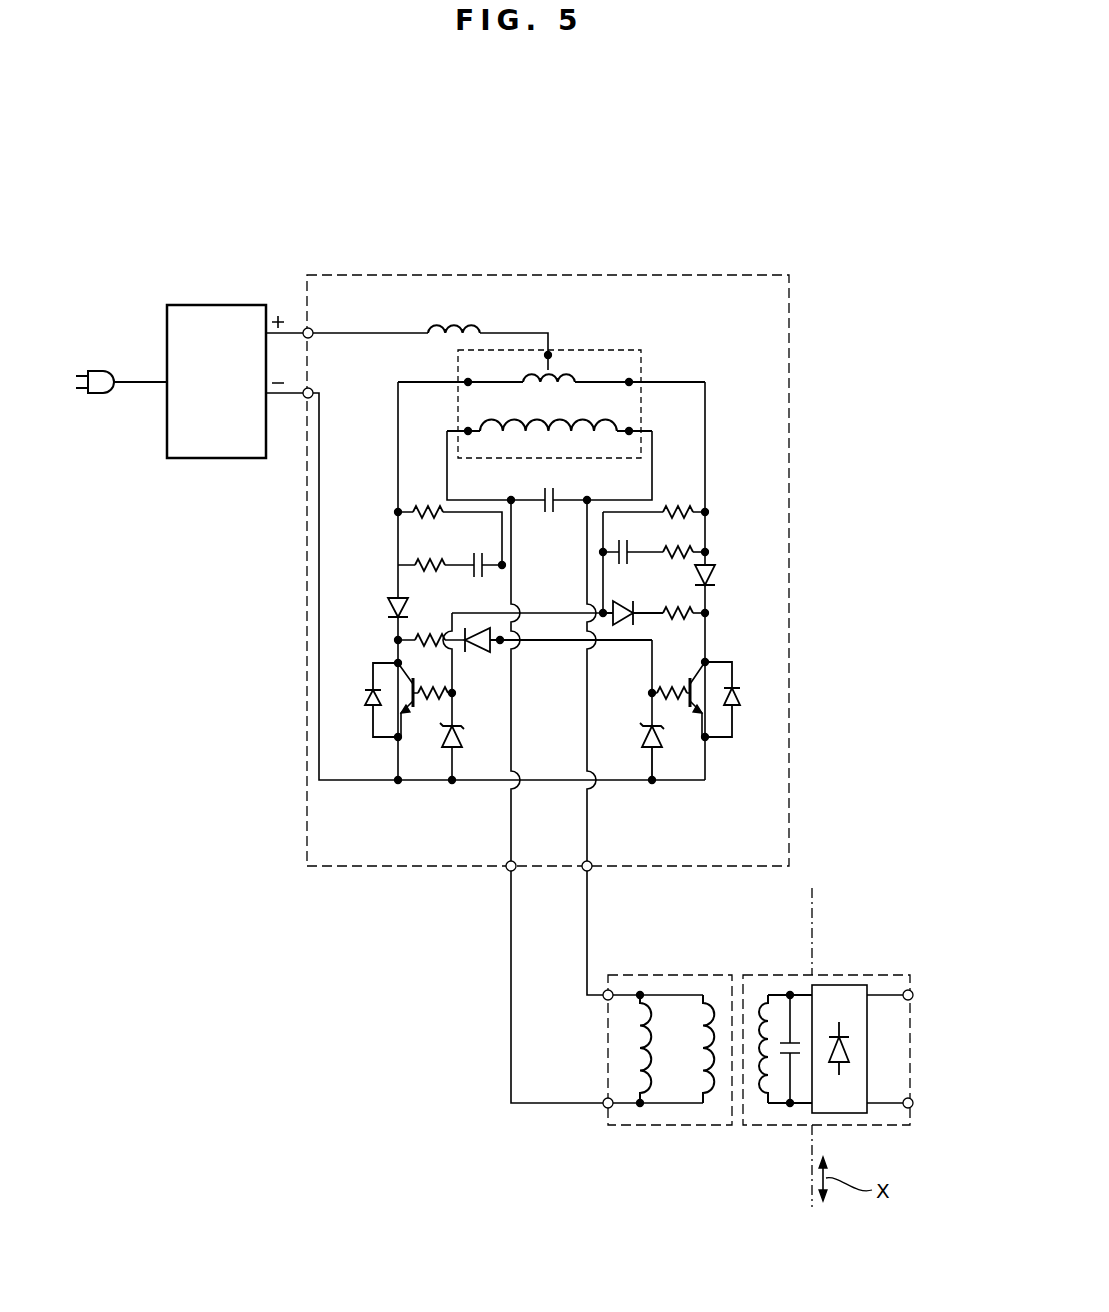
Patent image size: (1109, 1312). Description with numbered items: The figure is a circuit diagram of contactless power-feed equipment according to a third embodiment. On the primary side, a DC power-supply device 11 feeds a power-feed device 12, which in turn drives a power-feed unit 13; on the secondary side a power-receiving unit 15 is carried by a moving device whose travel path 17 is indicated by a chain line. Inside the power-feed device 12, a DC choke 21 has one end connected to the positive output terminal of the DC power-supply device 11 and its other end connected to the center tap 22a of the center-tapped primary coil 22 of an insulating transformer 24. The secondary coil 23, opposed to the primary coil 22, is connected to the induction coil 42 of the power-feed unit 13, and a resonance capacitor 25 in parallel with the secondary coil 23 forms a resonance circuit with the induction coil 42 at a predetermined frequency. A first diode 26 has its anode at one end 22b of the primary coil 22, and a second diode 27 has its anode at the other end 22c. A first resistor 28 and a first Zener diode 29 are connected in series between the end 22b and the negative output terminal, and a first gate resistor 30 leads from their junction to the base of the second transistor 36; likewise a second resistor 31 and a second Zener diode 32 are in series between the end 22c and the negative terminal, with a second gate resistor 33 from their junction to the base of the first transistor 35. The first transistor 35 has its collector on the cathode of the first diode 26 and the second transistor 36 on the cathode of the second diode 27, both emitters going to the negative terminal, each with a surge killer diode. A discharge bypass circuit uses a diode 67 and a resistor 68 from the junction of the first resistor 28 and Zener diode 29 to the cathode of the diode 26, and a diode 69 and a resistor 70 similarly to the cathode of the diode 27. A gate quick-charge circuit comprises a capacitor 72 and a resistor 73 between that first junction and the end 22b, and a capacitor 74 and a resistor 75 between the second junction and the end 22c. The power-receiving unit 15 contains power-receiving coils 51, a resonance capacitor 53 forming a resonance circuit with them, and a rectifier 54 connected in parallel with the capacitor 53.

The DC power-supply device 11 is at (200, 460).
The power-feed device 12 is at (790, 285).
The power-feed unit 13 is at (660, 1128).
The power-receiving unit 15 is at (913, 1040).
The travel path 17 is at (813, 908).
The DC choke 21 is at (474, 314).
The center-tapped primary coil 22 is at (578, 371).
The center tap 22a is at (549, 352).
The one end of the center-tapped primary coil 22b is at (466, 382).
The another end of the center-tapped primary coil 22c is at (629, 385).
The secondary coil 23 is at (477, 417).
The insulating transformer 24 is at (643, 358).
The resonance capacitor 25 is at (554, 488).
The first diode 26 is at (388, 600).
The second diode 27 is at (716, 570).
The first resistor 28 is at (424, 506).
The first Zener diode 29 is at (640, 726).
The first gate resistor 30 is at (658, 700).
The second resistor 31 is at (676, 508).
The second Zener diode 32 is at (460, 746).
The second gate resistor 33 is at (433, 702).
The first transistor 35 is at (420, 688).
The second transistor 36 is at (690, 680).
The induction coil 42 is at (640, 1035).
The power-receiving coils 51 is at (763, 1095).
The resonance capacitor 53 is at (785, 1105).
The rectifier 54 is at (855, 1102).
The diode 67 is at (478, 652).
The resistor 68 is at (425, 635).
The diode 69 is at (615, 601).
The resistor 70 is at (668, 601).
The capacitor 72 is at (476, 560).
The resistor 73 is at (423, 563).
The capacitor 74 is at (624, 549).
The resistor 75 is at (682, 552).